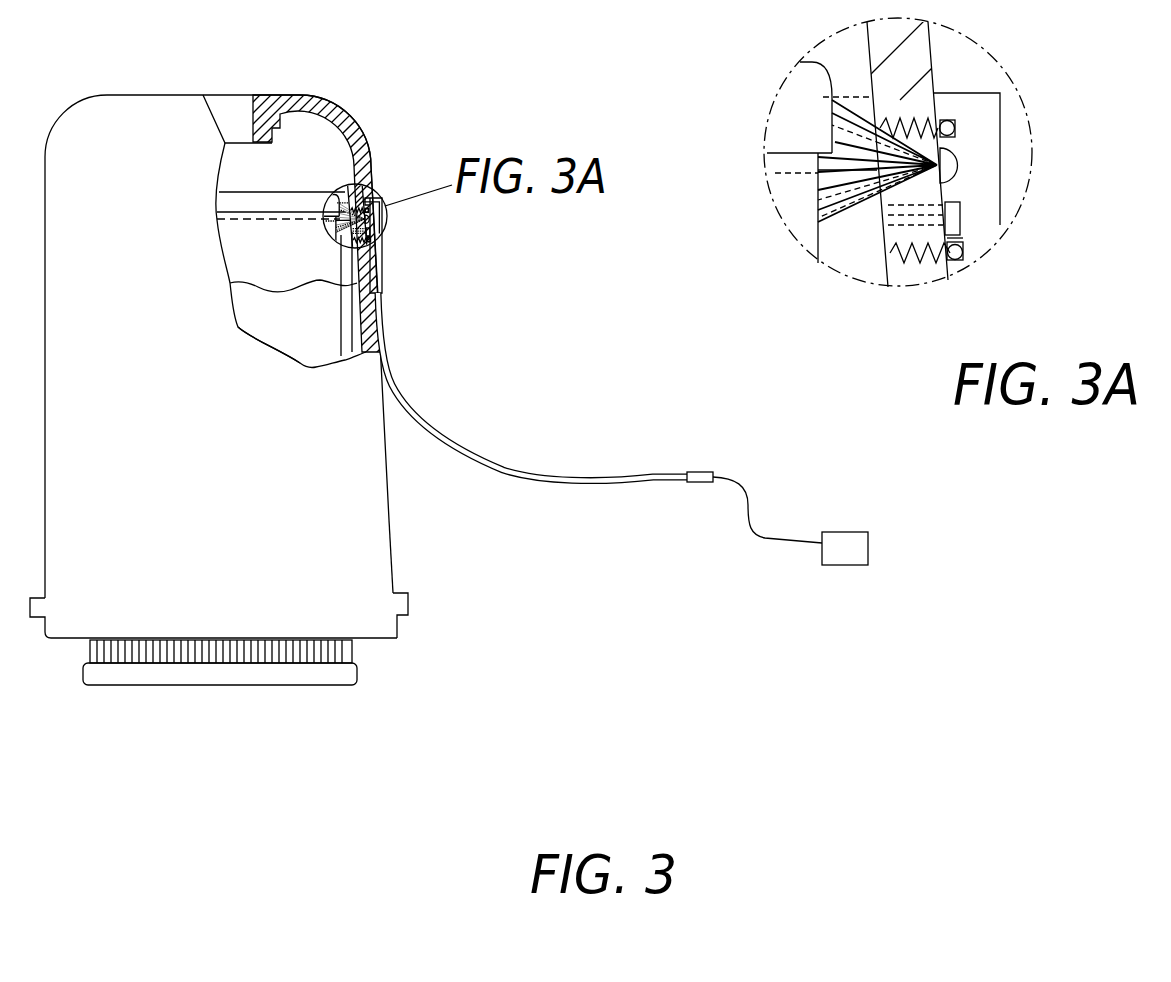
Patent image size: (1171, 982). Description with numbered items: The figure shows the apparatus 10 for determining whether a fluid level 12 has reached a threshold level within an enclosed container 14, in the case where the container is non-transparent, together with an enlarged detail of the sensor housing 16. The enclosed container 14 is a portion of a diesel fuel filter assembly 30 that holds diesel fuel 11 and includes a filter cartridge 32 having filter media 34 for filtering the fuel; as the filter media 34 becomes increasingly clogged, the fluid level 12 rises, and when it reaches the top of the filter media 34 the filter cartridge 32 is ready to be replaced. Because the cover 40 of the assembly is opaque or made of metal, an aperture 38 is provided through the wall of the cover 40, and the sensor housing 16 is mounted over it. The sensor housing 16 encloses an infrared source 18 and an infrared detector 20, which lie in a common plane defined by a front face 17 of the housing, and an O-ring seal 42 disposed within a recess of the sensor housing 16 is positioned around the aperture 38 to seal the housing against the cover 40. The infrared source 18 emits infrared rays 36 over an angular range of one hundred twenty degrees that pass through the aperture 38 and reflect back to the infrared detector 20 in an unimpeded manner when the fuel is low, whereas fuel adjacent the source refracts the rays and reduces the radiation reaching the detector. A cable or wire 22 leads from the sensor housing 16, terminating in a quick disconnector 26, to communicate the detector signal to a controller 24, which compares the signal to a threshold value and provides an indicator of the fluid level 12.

In FIG. 3, the apparatus 10 is at (529, 578).
In FIG. 3, the diesel fuel 11 is at (320, 356).
In FIG. 3, the fluid level 12 is at (260, 281).
In FIG. 3, the enclosed container 14 is at (400, 494).
In FIG. 3, the sensor housing 16 is at (383, 272).
In FIG. 3A, the sensor housing 16 is at (988, 95).
In FIG. 3A, the front face 17 is at (953, 263).
In FIG. 3A, the infrared source 18 is at (961, 167).
In FIG. 3A, the infrared detector 20 is at (961, 218).
In FIG. 3, the cable or wire 22 is at (597, 476).
In FIG. 3, the controller 24 is at (868, 548).
In FIG. 3, the quick disconnector 26 is at (717, 477).
In FIG. 3, the diesel fuel filter assembly 30 is at (407, 630).
In FIG. 3, the filter cartridge 32 is at (303, 190).
In FIG. 3, the filter media 34 is at (350, 650).
In FIG. 3A, the infrared rays 36 is at (842, 101).
In FIG. 3A, the aperture 38 is at (907, 265).
In FIG. 3, the opaque or metal cover 40 is at (395, 567).
In FIG. 3A, the O-ring seal 42 is at (956, 127).